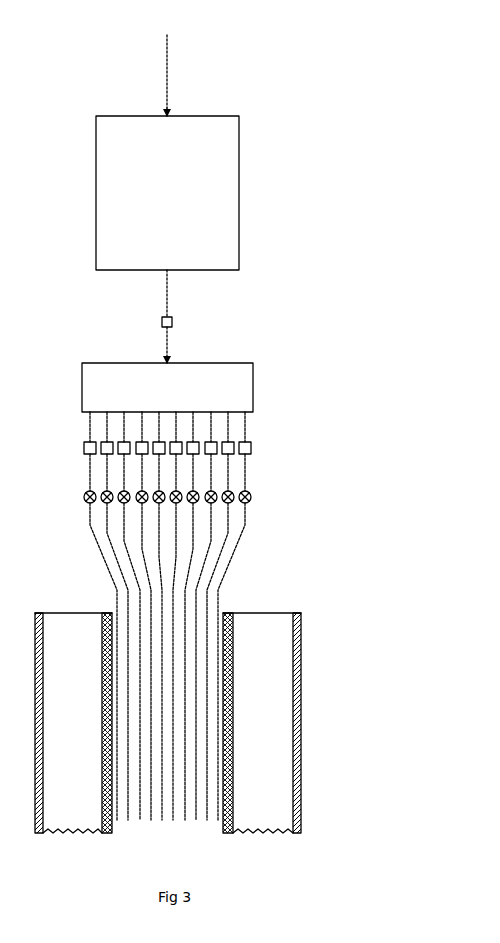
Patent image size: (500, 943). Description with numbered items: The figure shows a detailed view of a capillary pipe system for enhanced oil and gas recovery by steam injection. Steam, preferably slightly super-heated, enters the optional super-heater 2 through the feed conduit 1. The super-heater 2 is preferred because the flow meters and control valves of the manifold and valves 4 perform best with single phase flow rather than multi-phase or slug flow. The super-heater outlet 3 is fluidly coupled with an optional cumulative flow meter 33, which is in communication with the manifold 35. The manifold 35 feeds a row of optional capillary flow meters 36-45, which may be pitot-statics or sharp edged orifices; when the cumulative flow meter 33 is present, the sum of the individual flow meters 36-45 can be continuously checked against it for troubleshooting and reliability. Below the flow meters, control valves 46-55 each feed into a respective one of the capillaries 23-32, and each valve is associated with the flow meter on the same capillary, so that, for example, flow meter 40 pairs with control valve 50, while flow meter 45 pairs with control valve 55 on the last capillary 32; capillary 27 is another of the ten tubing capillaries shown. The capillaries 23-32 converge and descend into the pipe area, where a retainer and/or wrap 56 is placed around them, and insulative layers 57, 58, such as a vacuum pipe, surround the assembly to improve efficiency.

The feed conduit 1 is at (167, 70).
The super-heater 2 is at (239, 185).
The super-heater outlet 3 is at (167, 295).
The manifold and valves 4 is at (371, 363).
The cumulative flow meter 33 is at (173, 320).
The manifold 35 is at (253, 388).
The capillary flow meters 36-45 is at (152, 415).
The flow meter 40 is at (158, 442).
The flow meter 45 is at (250, 447).
The control valves 46-55 is at (174, 520).
The control valve 50 is at (158, 500).
The control valve 55 is at (248, 500).
The capillaries 23-32 is at (135, 655).
The capillary 27 is at (163, 820).
The capillary 32 is at (218, 820).
The retainer and/or wrap 56 is at (233, 827).
The insulative layer 57 is at (232, 613).
The insulative layer 58 is at (300, 688).